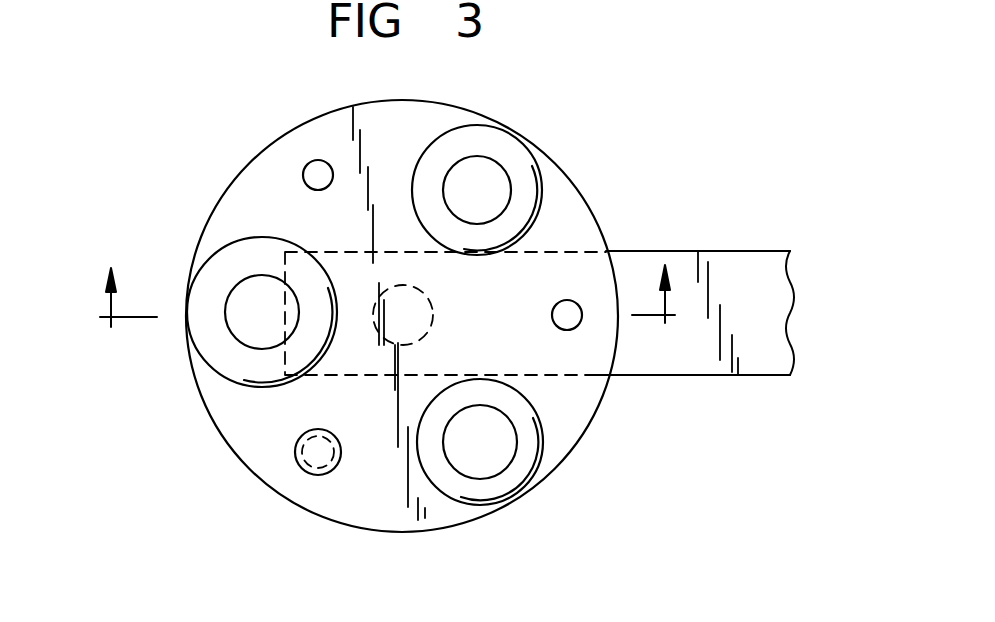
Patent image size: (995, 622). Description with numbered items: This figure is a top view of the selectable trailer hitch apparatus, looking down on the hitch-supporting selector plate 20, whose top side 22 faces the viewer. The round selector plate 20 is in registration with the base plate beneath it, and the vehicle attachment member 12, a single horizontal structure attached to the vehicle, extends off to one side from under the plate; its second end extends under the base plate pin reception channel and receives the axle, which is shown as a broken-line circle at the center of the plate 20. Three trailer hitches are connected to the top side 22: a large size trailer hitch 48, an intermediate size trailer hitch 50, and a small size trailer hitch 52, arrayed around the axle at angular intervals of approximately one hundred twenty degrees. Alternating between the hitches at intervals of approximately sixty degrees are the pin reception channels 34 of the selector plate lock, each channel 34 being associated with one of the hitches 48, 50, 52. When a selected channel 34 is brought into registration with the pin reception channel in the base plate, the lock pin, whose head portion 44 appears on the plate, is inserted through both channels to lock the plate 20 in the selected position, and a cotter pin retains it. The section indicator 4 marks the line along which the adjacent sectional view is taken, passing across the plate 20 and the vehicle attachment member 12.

The vehicle attachment member 12 is at (685, 347).
The hitch-supporting selector plate 20 is at (348, 523).
The top side 22 is at (238, 213).
The pin reception channels 34 is at (310, 168).
The head portion 44 is at (298, 468).
The large size trailer hitch 48 is at (212, 340).
The intermediate size trailer hitch 50 is at (530, 487).
The small size trailer hitch 52 is at (520, 192).
The section line 4- 4 is at (389, 267).